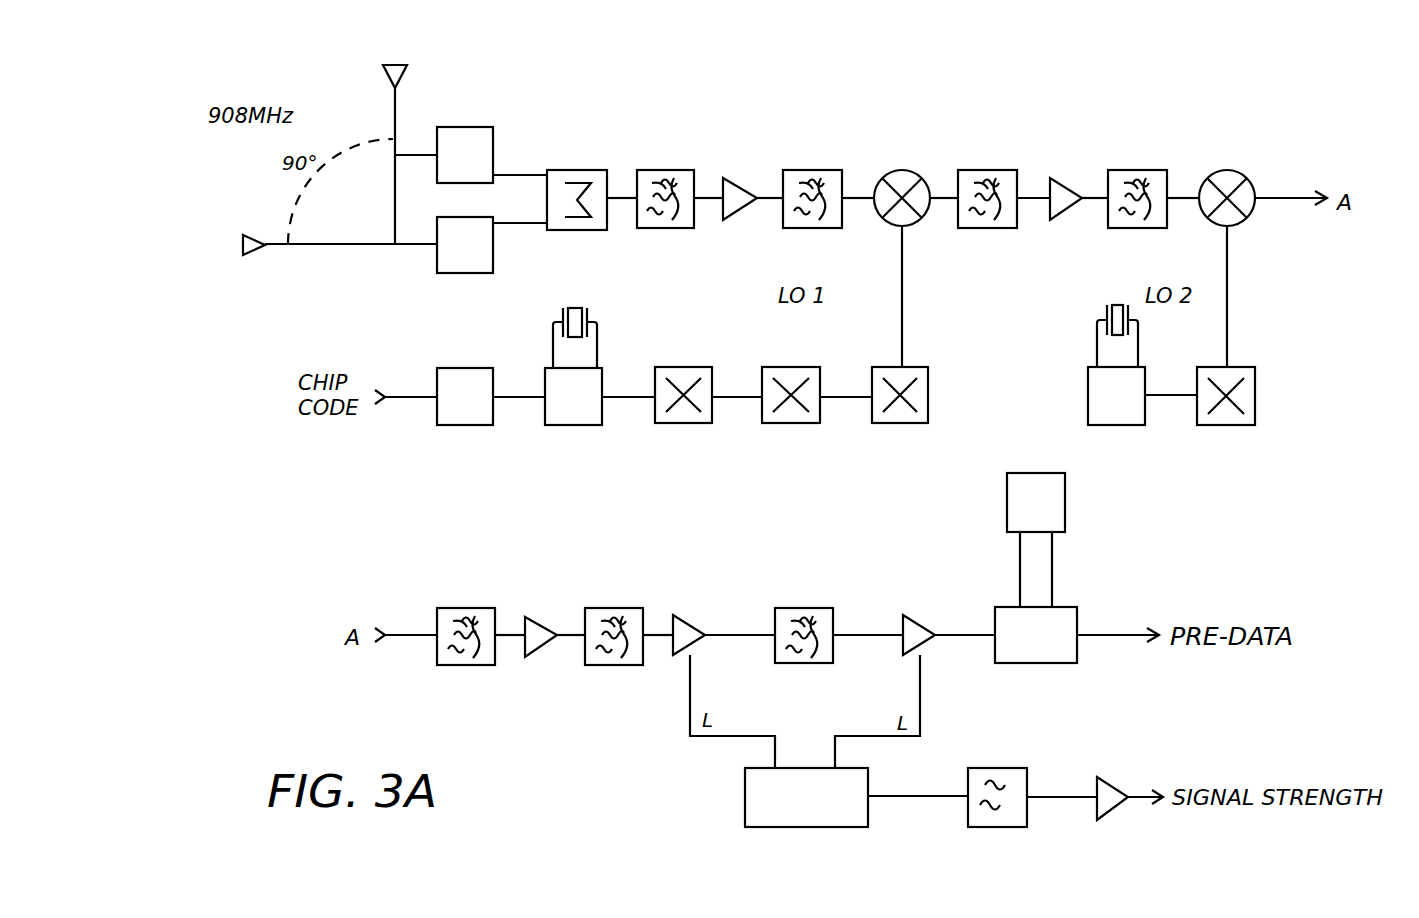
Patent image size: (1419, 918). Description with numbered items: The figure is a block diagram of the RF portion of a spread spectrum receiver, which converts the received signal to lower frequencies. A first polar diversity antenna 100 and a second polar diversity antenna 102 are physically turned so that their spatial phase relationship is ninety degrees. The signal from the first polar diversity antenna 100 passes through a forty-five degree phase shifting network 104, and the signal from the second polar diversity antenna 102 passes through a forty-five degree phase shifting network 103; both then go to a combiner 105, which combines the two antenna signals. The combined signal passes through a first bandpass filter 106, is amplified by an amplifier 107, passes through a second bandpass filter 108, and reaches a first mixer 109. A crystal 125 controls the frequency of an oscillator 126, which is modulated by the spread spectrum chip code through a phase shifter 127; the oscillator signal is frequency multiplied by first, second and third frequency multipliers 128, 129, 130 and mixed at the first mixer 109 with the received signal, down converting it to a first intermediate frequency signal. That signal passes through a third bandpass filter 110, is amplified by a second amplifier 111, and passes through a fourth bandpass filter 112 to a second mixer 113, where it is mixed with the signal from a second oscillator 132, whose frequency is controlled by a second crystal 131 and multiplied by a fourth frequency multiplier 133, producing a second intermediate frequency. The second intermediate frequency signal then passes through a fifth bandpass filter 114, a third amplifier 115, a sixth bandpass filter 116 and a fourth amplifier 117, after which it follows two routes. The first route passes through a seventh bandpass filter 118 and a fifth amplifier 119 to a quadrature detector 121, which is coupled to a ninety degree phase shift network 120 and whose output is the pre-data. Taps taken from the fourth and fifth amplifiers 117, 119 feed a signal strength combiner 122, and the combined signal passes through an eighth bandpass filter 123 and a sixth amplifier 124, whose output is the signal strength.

The first polar diversity antenna 100 is at (250, 235).
The second polar diversity antenna 102 is at (385, 70).
The 45° phase shifting network 103 is at (463, 127).
The 45° phase shifting network 104 is at (455, 273).
The combiner 105 is at (578, 170).
The first bandpass filter 106 is at (687, 228).
The amplifier 107 is at (758, 158).
The second bandpass filter 108 is at (836, 228).
The first mixer 109 is at (885, 172).
The third bandpass filter 110 is at (1012, 228).
The second amplifier 111 is at (1083, 157).
The fourth bandpass filter 112 is at (1160, 228).
The second mixer 113 is at (1208, 175).
The fifth bandpass filter 114 is at (490, 665).
The third amplifier 115 is at (558, 600).
The sixth bandpass filter 116 is at (638, 665).
The fourth amplifier 117 is at (692, 628).
The seventh bandpass filter 118 is at (830, 663).
The fifth amplifier 119 is at (920, 627).
The 90° phase shift network 120 is at (1035, 473).
The quadrature detector 121 is at (1077, 607).
The signal strength combiner 122 is at (868, 770).
The eighth bandpass filter 123 is at (1027, 770).
The sixth amplifier 124 is at (1115, 785).
The crystal 125 is at (553, 315).
The oscillator 126 is at (562, 425).
The phase shifter 127 is at (455, 425).
The first frequency multiplier 128 is at (670, 423).
The second frequency multiplier 129 is at (778, 423).
The third frequency multiplier 130 is at (888, 423).
The second crystal 131 is at (1097, 315).
The second oscillator 132 is at (1103, 425).
The fourth frequency multiplier 133 is at (1212, 425).